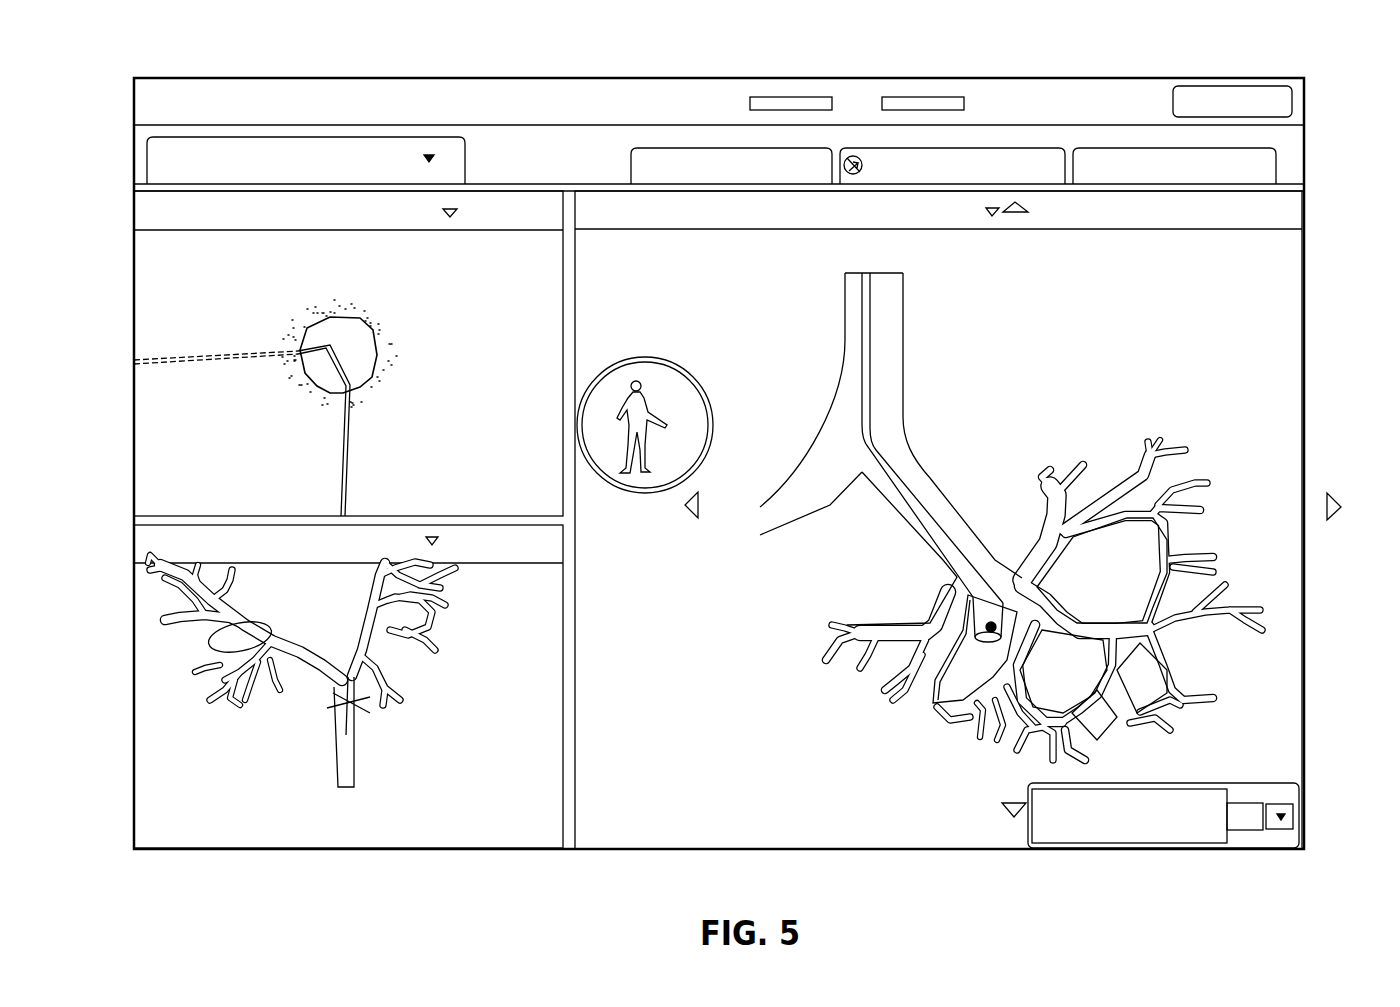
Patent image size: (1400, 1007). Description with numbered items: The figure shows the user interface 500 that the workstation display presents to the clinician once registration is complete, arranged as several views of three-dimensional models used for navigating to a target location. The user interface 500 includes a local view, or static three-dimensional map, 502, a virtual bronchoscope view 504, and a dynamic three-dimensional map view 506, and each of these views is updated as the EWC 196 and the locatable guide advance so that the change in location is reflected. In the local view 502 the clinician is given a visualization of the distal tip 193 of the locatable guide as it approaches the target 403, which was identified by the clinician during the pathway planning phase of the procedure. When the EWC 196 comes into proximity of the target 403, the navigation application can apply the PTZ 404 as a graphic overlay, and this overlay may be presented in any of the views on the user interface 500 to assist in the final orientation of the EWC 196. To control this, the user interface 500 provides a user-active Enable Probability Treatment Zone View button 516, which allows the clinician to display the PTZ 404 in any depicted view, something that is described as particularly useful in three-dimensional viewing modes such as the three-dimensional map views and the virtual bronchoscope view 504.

The user interface 500 is at (535, 150).
The local view (3D map static) 502 is at (1306, 393).
The virtual bronchoscope view 504 is at (130, 305).
The 3D map dynamic view 506 is at (132, 612).
The Enable Probability Treatment Zone View button 516 is at (1194, 850).
The target 403 is at (1002, 603).
The PTZ (probability treatment zone) 404 is at (988, 648).
The EWC 196 is at (865, 443).
The distal tip 193 is at (941, 705).